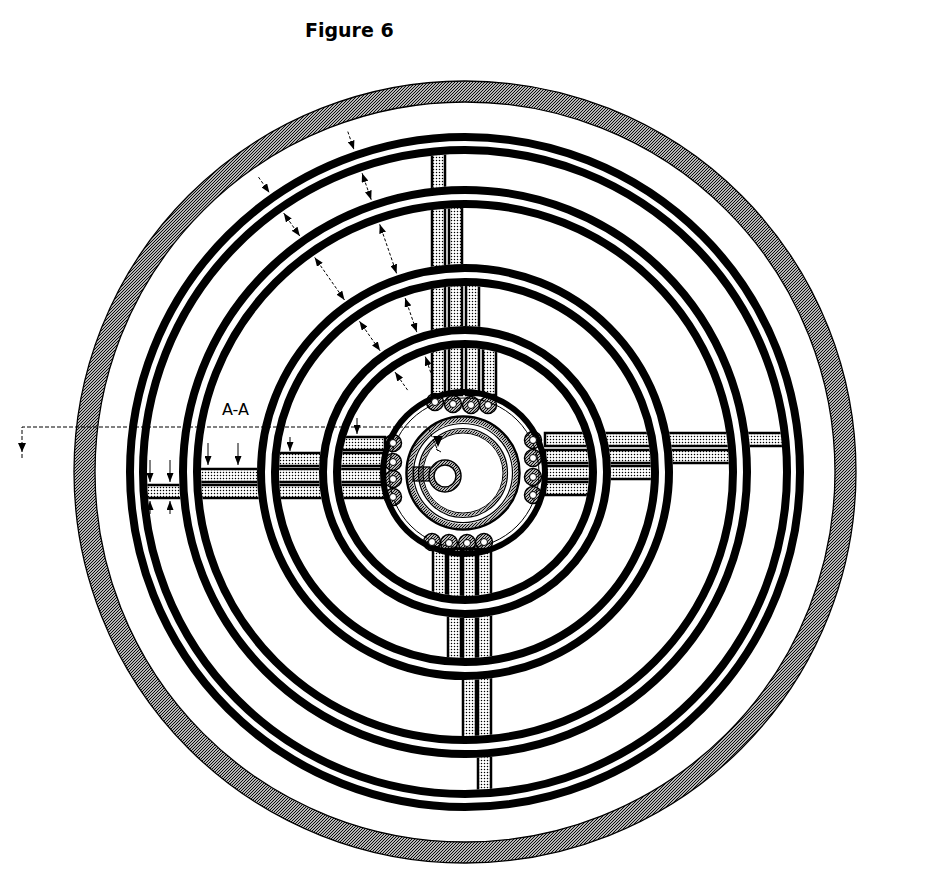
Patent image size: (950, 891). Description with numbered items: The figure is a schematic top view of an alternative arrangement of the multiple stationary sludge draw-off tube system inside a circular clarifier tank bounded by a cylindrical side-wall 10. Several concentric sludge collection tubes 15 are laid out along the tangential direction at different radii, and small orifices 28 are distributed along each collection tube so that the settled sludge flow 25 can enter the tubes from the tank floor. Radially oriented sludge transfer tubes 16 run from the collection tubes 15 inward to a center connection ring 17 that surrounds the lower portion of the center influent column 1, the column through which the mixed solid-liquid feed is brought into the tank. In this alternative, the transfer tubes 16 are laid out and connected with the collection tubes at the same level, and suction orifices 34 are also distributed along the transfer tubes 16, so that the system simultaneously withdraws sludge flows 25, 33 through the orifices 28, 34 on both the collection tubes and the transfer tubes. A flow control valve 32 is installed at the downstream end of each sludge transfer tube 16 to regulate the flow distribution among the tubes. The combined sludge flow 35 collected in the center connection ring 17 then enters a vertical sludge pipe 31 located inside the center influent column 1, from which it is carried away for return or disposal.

The center influent column 1 is at (497, 423).
The cylindrical side-wall 10 is at (855, 418).
The sludge collection tubes 15 is at (580, 378).
The sludge transfer tubes 16 is at (578, 492).
The center connection ring 17 is at (500, 540).
The sludge flow 25 is at (258, 180).
The small orifices 28 is at (347, 128).
The vertical sludge pipe 31 is at (467, 468).
The flow control valve 32 is at (538, 508).
The sludge flow 33 is at (140, 468).
The suction orifices 34 is at (292, 437).
The sludge flow 35 is at (405, 522).